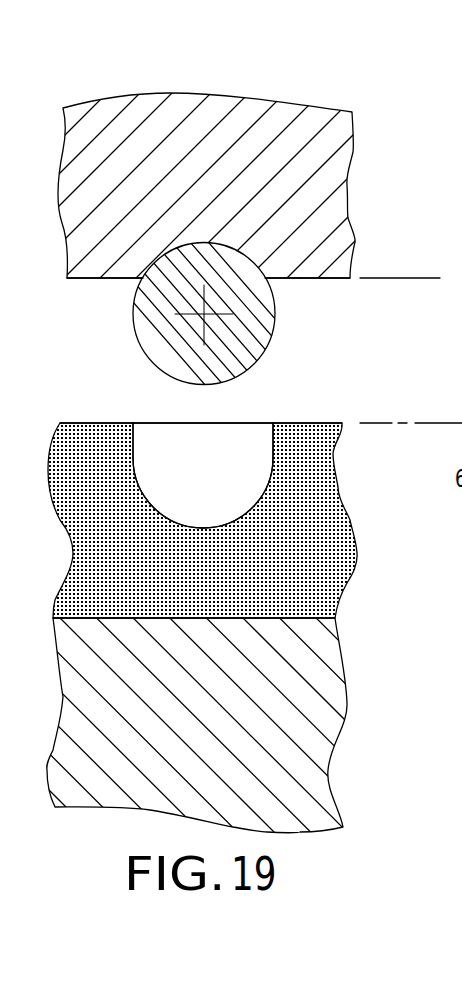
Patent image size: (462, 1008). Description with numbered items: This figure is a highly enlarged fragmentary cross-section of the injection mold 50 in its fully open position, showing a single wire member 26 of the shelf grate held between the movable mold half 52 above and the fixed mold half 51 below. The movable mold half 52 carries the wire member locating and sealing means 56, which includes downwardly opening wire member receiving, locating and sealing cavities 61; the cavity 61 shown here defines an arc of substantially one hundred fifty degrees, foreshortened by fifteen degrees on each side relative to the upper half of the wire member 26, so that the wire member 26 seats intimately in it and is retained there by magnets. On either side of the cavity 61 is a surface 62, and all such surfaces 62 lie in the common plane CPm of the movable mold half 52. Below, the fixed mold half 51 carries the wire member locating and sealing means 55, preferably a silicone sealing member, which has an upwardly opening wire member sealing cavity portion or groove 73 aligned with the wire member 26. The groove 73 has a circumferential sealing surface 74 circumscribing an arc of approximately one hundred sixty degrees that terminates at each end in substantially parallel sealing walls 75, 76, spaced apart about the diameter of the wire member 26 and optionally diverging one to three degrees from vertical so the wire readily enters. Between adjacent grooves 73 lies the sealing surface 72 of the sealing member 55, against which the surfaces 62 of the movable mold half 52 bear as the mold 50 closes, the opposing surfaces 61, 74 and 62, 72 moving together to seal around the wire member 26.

The injection mold 50 is at (387, 103).
The movable mold half 52 is at (223, 102).
The wire member 26 is at (247, 343).
The wire member receiving, locating and sealing cavity 61 is at (148, 263).
The surface 62 is at (79, 278).
The wire member locating and sealing means 56 is at (353, 260).
The common plane CPm is at (417, 278).
The wire member locating and sealing means 55 is at (347, 593).
The sealing surface 72 is at (75, 423).
The wire member sealing cavity portion or groove 73 is at (193, 453).
The circumferential sealing surface 74 is at (202, 528).
The sealing wall 75 is at (147, 423).
The sealing wall 76 is at (260, 423).
The fixed mold half 51 is at (337, 772).